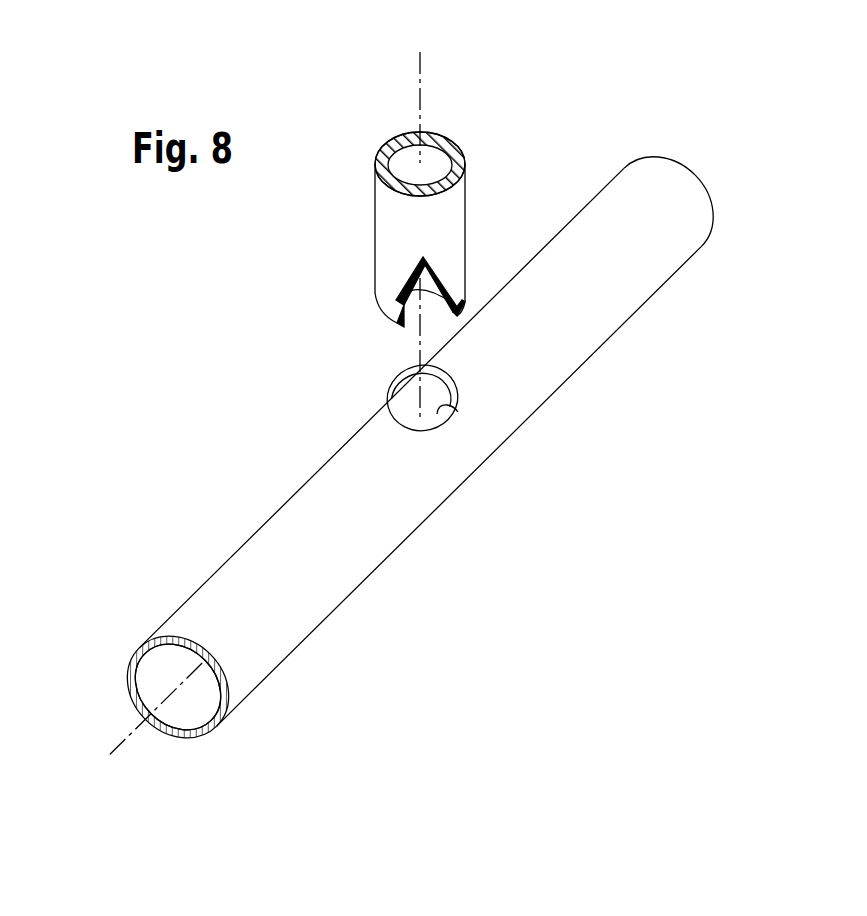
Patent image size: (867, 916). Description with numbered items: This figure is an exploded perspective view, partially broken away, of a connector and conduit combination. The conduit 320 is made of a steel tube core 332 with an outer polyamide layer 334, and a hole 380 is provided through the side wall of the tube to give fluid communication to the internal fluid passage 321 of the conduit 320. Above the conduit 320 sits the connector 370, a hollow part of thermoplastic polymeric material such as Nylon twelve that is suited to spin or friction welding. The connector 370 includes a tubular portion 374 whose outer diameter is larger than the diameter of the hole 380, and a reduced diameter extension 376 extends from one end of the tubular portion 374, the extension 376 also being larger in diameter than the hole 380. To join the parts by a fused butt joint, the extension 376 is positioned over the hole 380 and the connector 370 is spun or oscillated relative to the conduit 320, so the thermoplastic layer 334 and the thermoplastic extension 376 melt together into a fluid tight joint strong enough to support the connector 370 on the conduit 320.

The conduit 320 is at (396, 467).
The internal fluid passage 321 is at (145, 668).
The steel tube core 332 is at (195, 740).
The outer polyamide layer 334 is at (348, 568).
The connector 370 is at (378, 234).
The tubular portion 374 is at (387, 259).
The reduced diameter extension 376 is at (387, 320).
The hole 380 is at (452, 412).